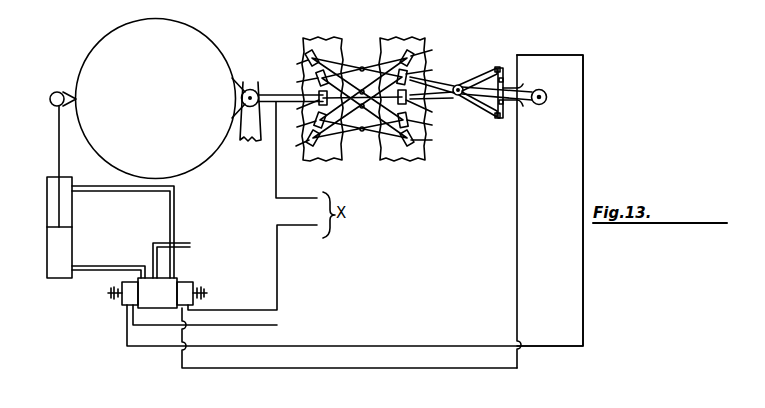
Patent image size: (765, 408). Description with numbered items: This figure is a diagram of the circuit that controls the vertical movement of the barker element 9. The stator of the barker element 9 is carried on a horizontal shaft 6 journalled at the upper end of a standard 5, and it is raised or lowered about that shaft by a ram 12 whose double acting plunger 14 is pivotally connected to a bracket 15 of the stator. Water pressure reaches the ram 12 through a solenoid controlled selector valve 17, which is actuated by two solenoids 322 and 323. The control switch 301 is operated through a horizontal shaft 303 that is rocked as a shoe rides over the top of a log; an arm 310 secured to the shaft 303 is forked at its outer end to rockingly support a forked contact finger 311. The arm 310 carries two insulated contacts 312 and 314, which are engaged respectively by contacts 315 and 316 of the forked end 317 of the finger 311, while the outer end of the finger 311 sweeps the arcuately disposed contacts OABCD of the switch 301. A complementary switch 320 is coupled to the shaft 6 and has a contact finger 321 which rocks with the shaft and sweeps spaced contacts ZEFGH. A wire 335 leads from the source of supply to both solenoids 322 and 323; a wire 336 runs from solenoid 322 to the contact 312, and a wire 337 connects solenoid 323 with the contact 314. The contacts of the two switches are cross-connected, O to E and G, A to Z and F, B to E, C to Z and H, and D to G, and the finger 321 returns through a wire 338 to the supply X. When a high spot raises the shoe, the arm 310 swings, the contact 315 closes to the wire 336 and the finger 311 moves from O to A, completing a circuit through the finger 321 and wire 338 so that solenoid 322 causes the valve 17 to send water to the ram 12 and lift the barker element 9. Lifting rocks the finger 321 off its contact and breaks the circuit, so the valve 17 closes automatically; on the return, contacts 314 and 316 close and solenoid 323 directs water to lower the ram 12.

The barker element 9 is at (100, 48).
The bracket 15 is at (72, 88).
The double acting plunger 14 is at (57, 150).
The ram 12 is at (73, 215).
The selector valve 17 is at (153, 302).
The solenoid 322 is at (187, 283).
The solenoid 323 is at (130, 297).
The wire 335 is at (277, 272).
The wire 336 is at (515, 285).
The wire 337 is at (583, 297).
The wire 338 is at (278, 180).
The horizontal shaft 6 is at (250, 88).
The standard 5 is at (240, 139).
The contact finger 321 is at (274, 93).
The switch 320 is at (312, 40).
The control switch 301 is at (395, 42).
The contact 316 is at (505, 78).
The forked end 317 is at (496, 69).
The forked contact finger 311 is at (489, 117).
The contact 315 is at (505, 118).
The insulated contact 314 is at (523, 84).
The insulated contact 312 is at (523, 106).
The arm 310 is at (525, 110).
The horizontal shaft 303 is at (545, 100).